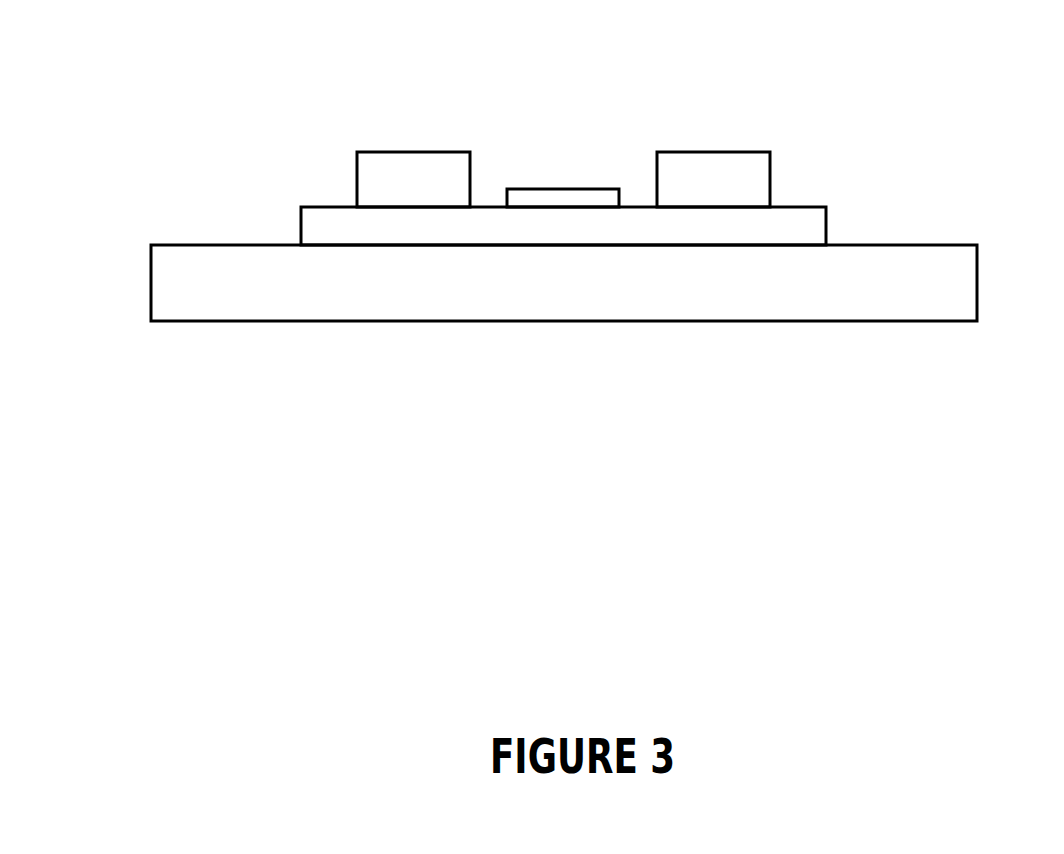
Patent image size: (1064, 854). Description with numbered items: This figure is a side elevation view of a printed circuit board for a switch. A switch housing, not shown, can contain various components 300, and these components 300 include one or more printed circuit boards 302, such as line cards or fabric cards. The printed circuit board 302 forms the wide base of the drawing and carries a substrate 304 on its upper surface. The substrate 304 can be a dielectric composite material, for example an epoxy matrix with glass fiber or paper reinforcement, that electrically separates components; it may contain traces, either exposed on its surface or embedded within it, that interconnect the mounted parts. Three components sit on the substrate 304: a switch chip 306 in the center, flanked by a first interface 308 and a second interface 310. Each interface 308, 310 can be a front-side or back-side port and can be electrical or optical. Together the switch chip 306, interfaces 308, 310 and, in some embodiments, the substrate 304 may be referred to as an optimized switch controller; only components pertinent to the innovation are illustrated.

The components 300 is at (247, 97).
The printed circuit board 302 is at (978, 288).
The substrate 304 is at (828, 228).
The switch chip 306 is at (565, 189).
The first interface 308 is at (714, 152).
The second interface 310 is at (429, 152).